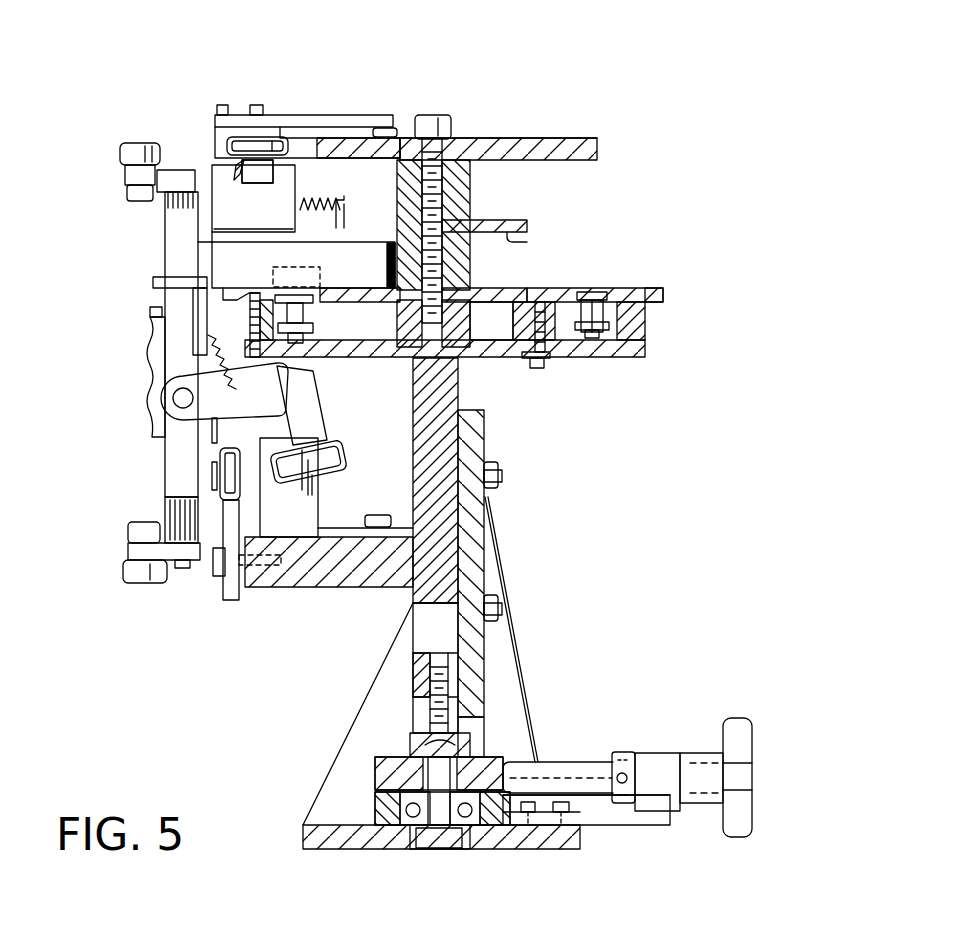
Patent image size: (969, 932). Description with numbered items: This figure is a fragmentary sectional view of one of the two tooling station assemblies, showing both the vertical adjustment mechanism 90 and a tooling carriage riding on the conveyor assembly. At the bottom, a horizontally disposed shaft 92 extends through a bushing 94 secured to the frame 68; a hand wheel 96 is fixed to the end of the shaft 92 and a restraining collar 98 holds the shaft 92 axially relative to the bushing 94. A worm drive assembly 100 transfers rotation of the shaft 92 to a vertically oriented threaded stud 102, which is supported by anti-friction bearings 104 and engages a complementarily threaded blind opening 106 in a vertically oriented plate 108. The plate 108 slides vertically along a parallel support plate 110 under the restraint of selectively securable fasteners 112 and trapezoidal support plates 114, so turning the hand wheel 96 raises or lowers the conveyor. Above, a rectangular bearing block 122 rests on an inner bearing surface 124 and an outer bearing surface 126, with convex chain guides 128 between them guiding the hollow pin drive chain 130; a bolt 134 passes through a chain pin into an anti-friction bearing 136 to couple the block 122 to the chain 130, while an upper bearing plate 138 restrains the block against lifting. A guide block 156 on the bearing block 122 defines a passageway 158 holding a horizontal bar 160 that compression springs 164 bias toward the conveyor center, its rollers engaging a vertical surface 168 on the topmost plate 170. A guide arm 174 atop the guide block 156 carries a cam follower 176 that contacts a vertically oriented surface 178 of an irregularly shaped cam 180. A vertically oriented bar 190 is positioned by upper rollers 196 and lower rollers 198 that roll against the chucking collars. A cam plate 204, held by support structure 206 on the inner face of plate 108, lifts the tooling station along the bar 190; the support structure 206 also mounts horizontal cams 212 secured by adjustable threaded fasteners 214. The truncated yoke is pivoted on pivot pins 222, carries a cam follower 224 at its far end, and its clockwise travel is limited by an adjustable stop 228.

The frame 68 is at (513, 850).
The adjustment mechanism 90 is at (590, 667).
The shaft 92 is at (570, 770).
The bushing 94 is at (650, 795).
The hand wheel 96 is at (752, 745).
The restraining collar 98 is at (625, 752).
The worm drive assembly 100 is at (389, 745).
The threaded stud 102 is at (430, 673).
The anti-friction bearings 104 is at (415, 835).
The threaded blind opening 106 is at (430, 648).
The vertically oriented plate 108 is at (413, 470).
The parallel support plate 110 is at (484, 435).
The selectively securable fasteners 112 is at (500, 605).
The trapezoidal support plates 114 is at (525, 700).
The bearing block 122 is at (235, 265).
The inner bearing surface 124 is at (505, 290).
The outer bearing surface 126 is at (232, 283).
The convex chain guides 128 is at (525, 327).
The drive chain 130 is at (598, 290).
The bolt 134 is at (312, 332).
The anti-friction bearing 136 is at (320, 280).
The upper bearing plate 138 is at (527, 232).
The guide block 156 is at (272, 220).
The passageway 158 is at (242, 165).
The bar 160 is at (275, 172).
The compression springs 164 is at (237, 182).
The vertical surface 168 is at (597, 150).
The topmost plate 170 is at (522, 138).
The guide arm 174 is at (300, 115).
The cam follower 176 is at (390, 128).
The vertically oriented surface 178 is at (402, 128).
The irregularly shaped cams 180 is at (425, 115).
The vertically oriented bar 190 is at (172, 518).
The rollers 196 is at (120, 152).
The rollers 198 is at (123, 578).
The cam plate 204 is at (216, 577).
The support structure 206 is at (305, 587).
The cams 212 is at (282, 503).
The threaded fasteners 214 is at (372, 525).
The pivot pins 222 is at (173, 396).
The cam follower 224 is at (345, 455).
The adjustable stop 228 is at (255, 330).